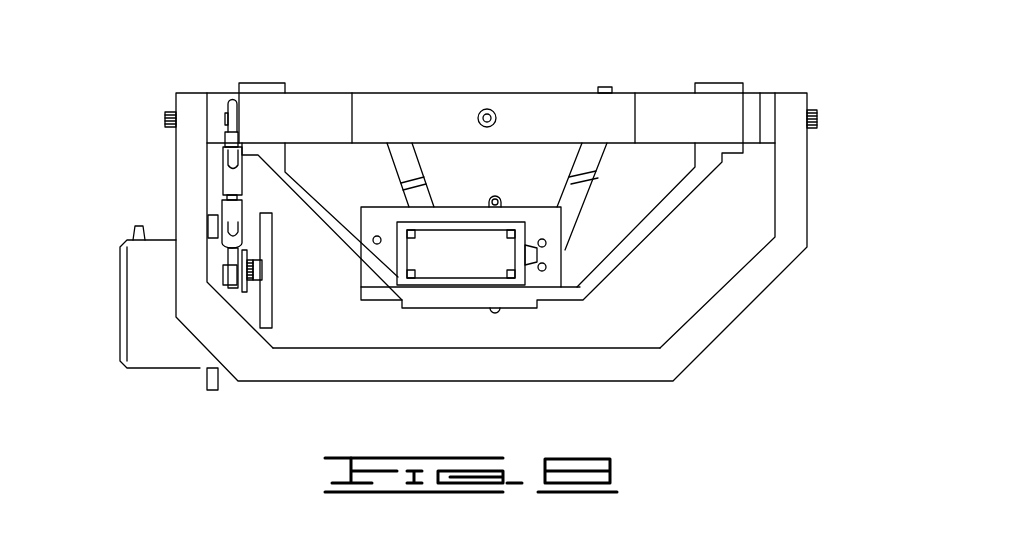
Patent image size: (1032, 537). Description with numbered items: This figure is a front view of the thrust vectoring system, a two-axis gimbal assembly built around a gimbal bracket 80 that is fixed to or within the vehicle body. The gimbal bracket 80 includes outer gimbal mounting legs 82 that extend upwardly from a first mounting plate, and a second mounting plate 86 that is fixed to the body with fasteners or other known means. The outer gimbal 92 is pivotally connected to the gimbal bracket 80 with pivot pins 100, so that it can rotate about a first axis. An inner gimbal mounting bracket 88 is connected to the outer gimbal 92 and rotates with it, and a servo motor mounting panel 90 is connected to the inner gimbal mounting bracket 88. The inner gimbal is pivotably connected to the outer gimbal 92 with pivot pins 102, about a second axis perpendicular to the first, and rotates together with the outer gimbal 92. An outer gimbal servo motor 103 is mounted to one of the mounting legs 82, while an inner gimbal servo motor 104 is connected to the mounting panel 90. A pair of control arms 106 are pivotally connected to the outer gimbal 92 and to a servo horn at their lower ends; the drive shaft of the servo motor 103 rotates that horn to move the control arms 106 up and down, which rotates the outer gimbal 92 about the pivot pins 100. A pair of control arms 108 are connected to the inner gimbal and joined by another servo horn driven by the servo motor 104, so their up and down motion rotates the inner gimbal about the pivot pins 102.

The gimbal bracket 80 is at (807, 183).
The outer gimbal mounting legs 82 is at (176, 217).
The second mounting plate 86 is at (515, 370).
The inner gimbal mounting bracket 88 is at (623, 262).
The servo motor mounting panel 90 is at (535, 217).
The outer gimbal 92 is at (343, 93).
The pivot pins 100 is at (165, 113).
The pivot pins 102 is at (483, 108).
The outer gimbal servo motor 103 is at (120, 305).
The inner gimbal servo motor 104 is at (438, 262).
The control arms 106 is at (222, 173).
The control arms 108 is at (395, 167).